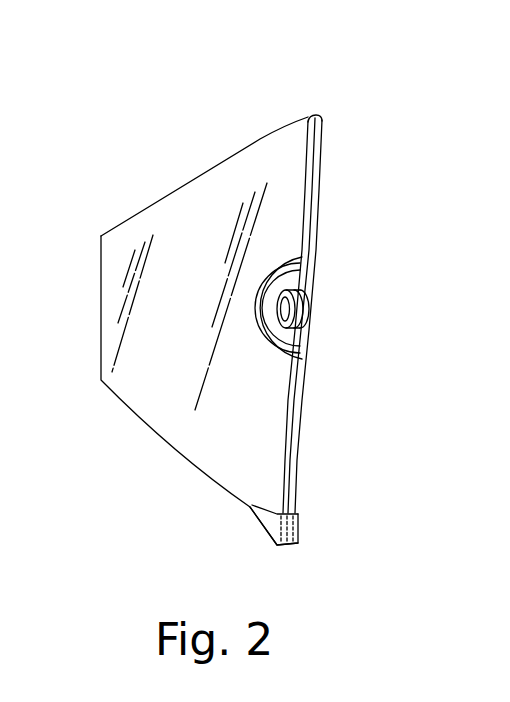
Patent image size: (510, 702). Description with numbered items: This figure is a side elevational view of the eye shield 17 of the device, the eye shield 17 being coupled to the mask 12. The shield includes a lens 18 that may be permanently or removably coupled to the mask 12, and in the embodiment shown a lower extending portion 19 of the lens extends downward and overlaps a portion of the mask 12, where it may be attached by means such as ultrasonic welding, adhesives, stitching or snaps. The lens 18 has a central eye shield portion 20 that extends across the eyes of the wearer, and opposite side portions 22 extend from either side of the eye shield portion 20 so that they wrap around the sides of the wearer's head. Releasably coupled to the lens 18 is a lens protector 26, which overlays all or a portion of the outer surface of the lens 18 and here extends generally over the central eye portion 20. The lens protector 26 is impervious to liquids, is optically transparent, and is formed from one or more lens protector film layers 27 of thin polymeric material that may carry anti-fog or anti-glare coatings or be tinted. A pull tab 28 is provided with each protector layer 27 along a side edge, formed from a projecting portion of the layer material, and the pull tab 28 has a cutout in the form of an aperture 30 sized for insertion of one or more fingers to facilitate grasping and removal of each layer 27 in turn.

The mask 12 is at (301, 528).
The eye shield 17 is at (250, 286).
The lens 18 is at (290, 116).
The lower extending portion 19 is at (266, 521).
The central eye shield portion 20 is at (309, 116).
The side portions 22 is at (147, 385).
The lens protector 26 is at (328, 150).
The lens protector film layers 27 is at (305, 395).
The pull tab 28 is at (298, 275).
The aperture 30 is at (291, 311).